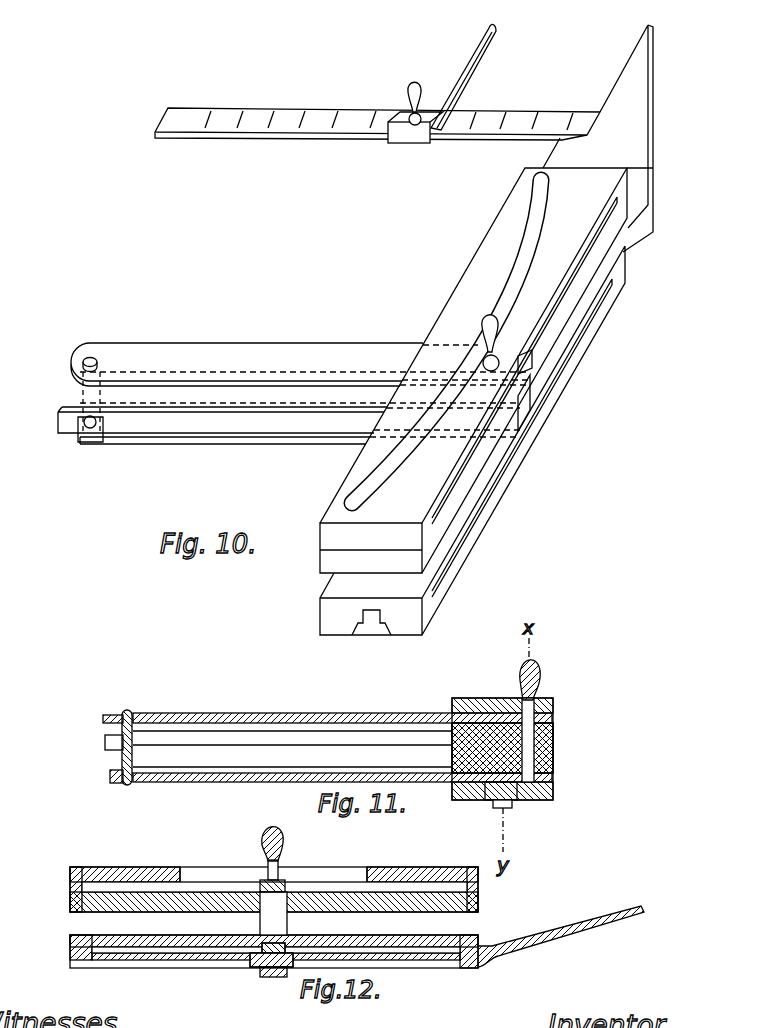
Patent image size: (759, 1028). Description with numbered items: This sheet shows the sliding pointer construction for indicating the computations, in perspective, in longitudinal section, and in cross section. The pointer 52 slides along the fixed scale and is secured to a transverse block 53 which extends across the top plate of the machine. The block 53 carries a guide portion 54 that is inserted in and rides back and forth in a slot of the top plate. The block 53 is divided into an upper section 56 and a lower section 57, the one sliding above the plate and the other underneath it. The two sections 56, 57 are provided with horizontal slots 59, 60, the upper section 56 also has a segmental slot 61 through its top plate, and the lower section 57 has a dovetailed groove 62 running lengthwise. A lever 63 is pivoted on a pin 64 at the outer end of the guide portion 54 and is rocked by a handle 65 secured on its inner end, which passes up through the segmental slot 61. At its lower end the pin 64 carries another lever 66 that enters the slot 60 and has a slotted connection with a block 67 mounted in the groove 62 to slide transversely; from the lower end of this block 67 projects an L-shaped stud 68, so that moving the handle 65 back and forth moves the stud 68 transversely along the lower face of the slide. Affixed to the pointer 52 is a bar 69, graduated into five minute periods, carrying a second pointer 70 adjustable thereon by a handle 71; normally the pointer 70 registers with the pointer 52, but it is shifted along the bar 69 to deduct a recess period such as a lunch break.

In FIG. 10, the pointer 52 is at (655, 50).
In FIG. 12, the pointer 52 is at (578, 917).
In FIG. 10, the block 53 is at (600, 183).
In FIG. 10, the guide portion 54 is at (255, 424).
In FIG. 10, the upper section 56 is at (340, 547).
In FIG. 12, the upper section 56 is at (130, 867).
In FIG. 10, the lower section 57 is at (330, 608).
In FIG. 12, the lower section 57 is at (68, 950).
In FIG. 10, the horizontal slot 59 is at (597, 243).
In FIG. 10, the horizontal slot 60 is at (590, 333).
In FIG. 12, the horizontal slot 60 is at (210, 949).
In FIG. 10, the segmental slot 61 is at (530, 252).
In FIG. 12, the segmental slot 61 is at (200, 866).
In FIG. 10, the dovetailed groove 62 is at (378, 622).
In FIG. 10, the lever 63 is at (312, 358).
In FIG. 11, the lever 63 is at (276, 713).
In FIG. 10, the pin 64 is at (93, 358).
In FIG. 11, the pin 64 is at (126, 712).
In FIG. 10, the handle 65 is at (485, 333).
In FIG. 11, the handle 65 is at (538, 662).
In FIG. 12, the handle 65 is at (284, 842).
In FIG. 10, the lever 66 is at (172, 440).
In FIG. 11, the lever 66 is at (218, 783).
In FIG. 11, the block 67 is at (517, 802).
In FIG. 11, the L-shaped stud 68 is at (500, 823).
In FIG. 10, the bar 69 is at (492, 128).
In FIG. 10, the second pointer 70 is at (427, 88).
In FIG. 10, the handle 71 is at (413, 82).